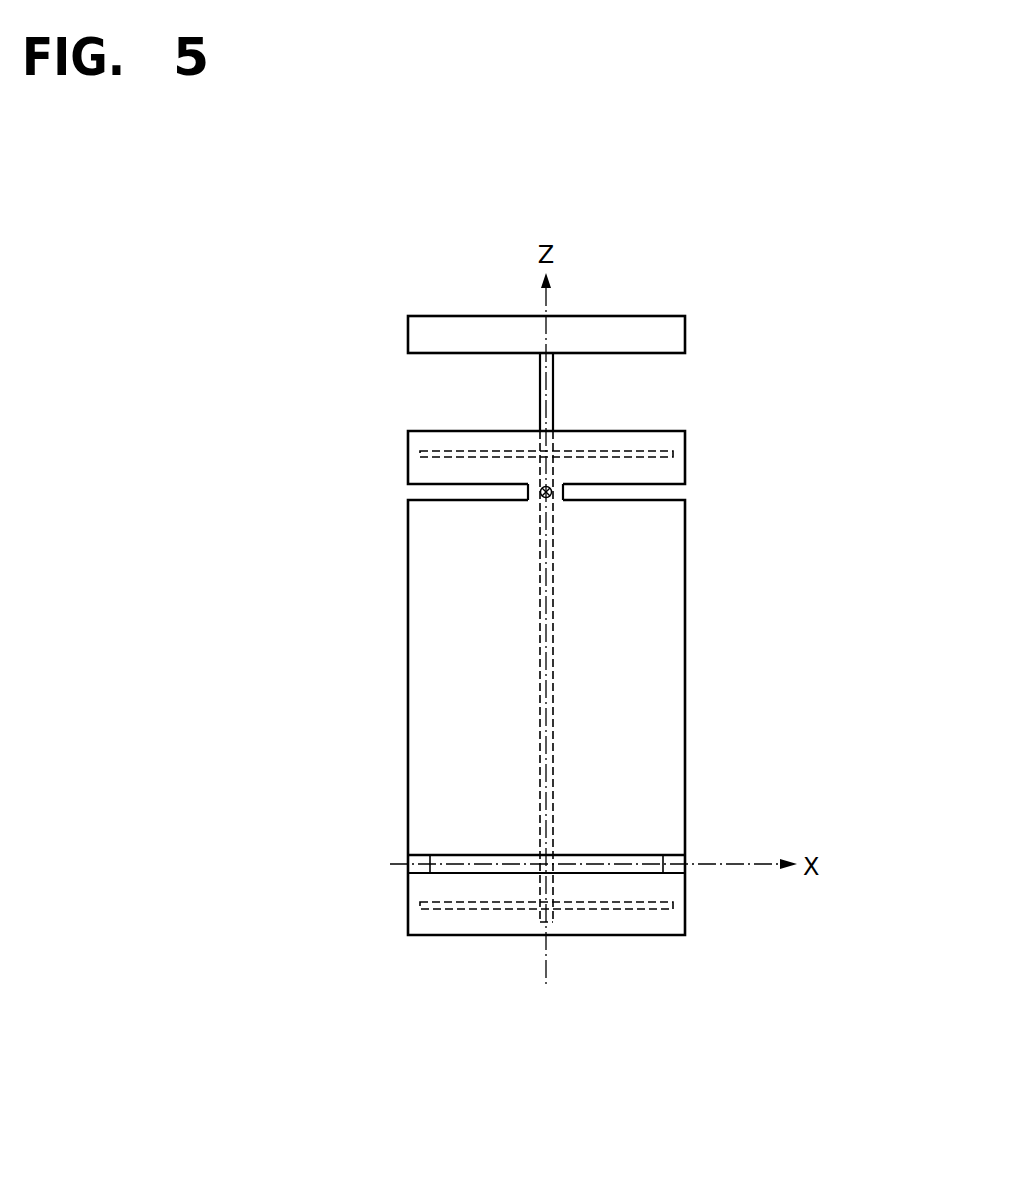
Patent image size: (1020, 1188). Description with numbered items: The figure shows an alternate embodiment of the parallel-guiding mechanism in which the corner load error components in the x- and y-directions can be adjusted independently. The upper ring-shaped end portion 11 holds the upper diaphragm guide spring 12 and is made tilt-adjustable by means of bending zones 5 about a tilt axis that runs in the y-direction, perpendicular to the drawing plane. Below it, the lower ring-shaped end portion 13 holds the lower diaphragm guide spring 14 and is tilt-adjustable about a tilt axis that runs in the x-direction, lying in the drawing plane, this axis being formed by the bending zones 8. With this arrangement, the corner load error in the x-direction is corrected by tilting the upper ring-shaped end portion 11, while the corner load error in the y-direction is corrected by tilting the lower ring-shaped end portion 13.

The bending zones 5 is at (565, 491).
The bending zones 8 is at (422, 863).
The upper ring-shaped end portion 11 is at (438, 469).
The upper diaphragm guide spring 12 is at (653, 452).
The lower ring-shaped end portion 13 is at (450, 920).
The lower diaphragm guide spring 14 is at (663, 908).